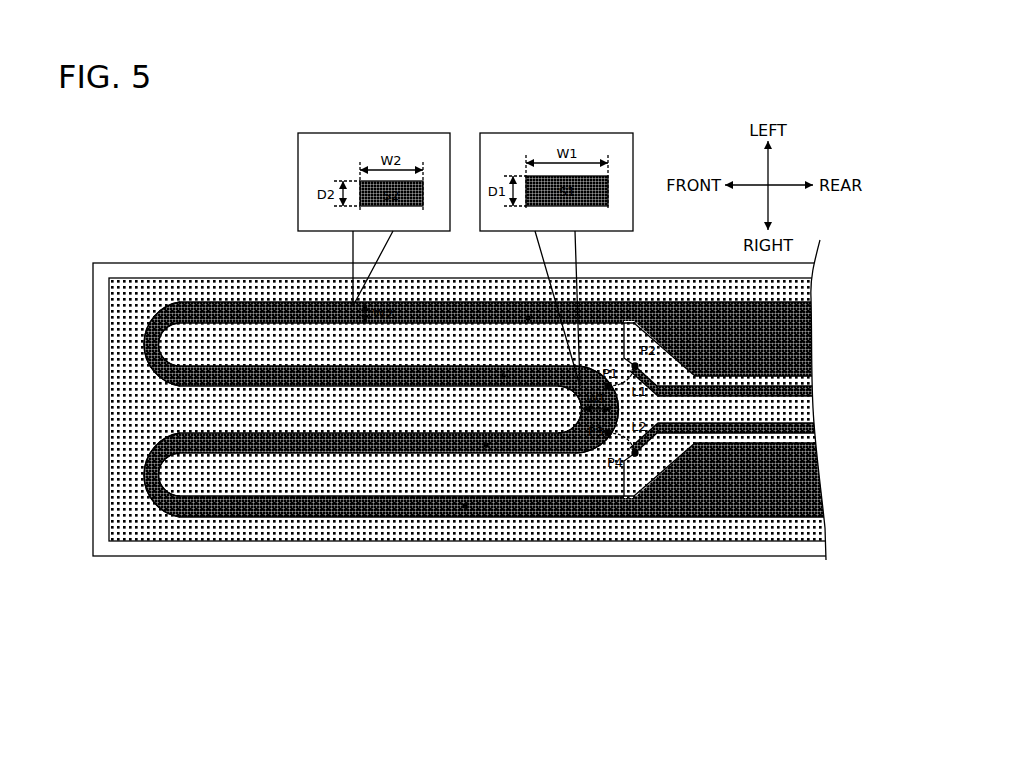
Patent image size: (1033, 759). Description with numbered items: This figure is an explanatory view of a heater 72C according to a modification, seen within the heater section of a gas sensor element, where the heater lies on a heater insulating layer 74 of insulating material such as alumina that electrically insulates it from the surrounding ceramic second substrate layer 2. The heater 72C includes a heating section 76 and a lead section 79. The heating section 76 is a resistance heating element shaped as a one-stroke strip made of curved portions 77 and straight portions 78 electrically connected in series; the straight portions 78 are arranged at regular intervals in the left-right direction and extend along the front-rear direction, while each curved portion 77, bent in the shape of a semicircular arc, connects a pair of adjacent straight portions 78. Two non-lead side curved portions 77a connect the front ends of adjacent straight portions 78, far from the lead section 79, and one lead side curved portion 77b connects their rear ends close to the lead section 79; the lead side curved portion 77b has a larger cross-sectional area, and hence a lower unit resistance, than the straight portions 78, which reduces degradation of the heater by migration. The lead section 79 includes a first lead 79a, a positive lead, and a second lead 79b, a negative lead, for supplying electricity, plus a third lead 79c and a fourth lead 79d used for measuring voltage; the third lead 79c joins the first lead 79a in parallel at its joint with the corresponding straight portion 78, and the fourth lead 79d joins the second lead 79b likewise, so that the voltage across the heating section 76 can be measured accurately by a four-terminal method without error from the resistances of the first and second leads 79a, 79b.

The second substrate layer 2 is at (118, 542).
The heater insulating layer 74 is at (172, 524).
The heater 72C is at (446, 488).
The heating section 76 is at (446, 467).
The curved portions 77 is at (446, 450).
The non-lead side curved portions 77a is at (142, 314).
The lead side curved portion 77b is at (565, 446).
The straight portions 78 is at (520, 310).
The lead section 79 is at (731, 489).
The first lead 79a is at (683, 333).
The second lead 79b is at (693, 455).
The third lead 79c is at (732, 387).
The fourth lead 79d is at (770, 417).